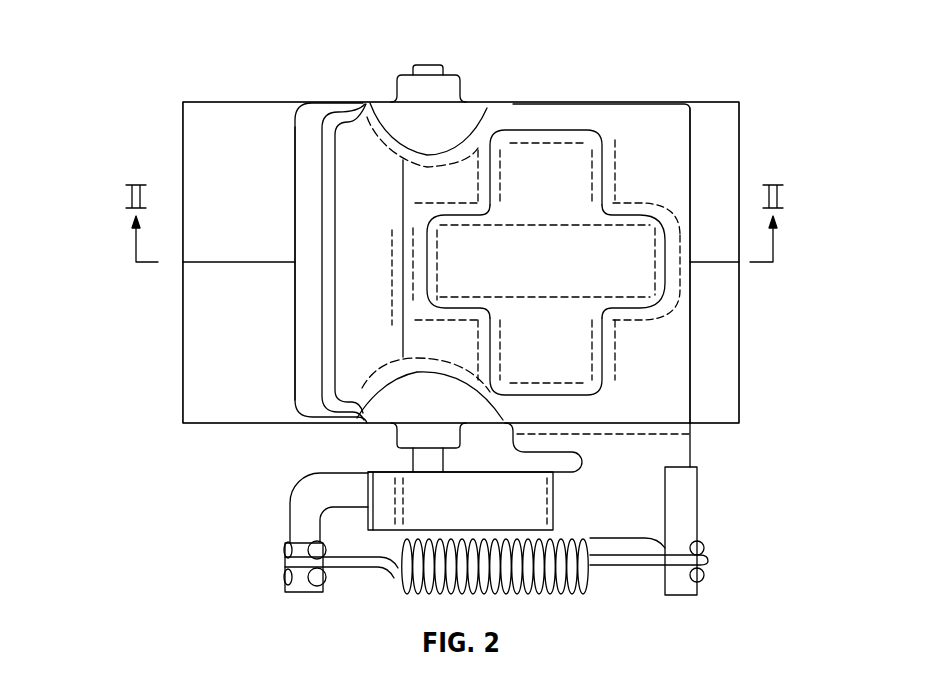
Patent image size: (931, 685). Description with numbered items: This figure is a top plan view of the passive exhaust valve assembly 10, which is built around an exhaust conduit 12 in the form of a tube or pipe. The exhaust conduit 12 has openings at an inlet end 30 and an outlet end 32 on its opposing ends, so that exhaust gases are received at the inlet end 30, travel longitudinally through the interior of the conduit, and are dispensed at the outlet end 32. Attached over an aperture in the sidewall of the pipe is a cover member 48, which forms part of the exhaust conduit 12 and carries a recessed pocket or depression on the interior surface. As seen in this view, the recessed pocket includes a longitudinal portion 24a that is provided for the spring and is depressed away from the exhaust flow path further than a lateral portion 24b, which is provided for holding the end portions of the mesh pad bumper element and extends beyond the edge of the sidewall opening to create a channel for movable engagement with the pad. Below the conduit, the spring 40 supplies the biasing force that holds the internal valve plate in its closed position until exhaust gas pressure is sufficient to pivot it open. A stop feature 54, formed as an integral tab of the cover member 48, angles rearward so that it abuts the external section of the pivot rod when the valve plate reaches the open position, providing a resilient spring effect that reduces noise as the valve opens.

The passive exhaust valve assembly 10 is at (160, 80).
The exhaust conduit 12 is at (715, 102).
The cover member 48 is at (553, 120).
The outlet end 32 is at (128, 339).
The inlet end 30 is at (752, 322).
The longitudinal portion of the recessed pocket 24a is at (575, 282).
The lateral portion of the recessed pocket 24b is at (520, 344).
The stop feature 54 is at (387, 471).
The spring 40 is at (573, 596).